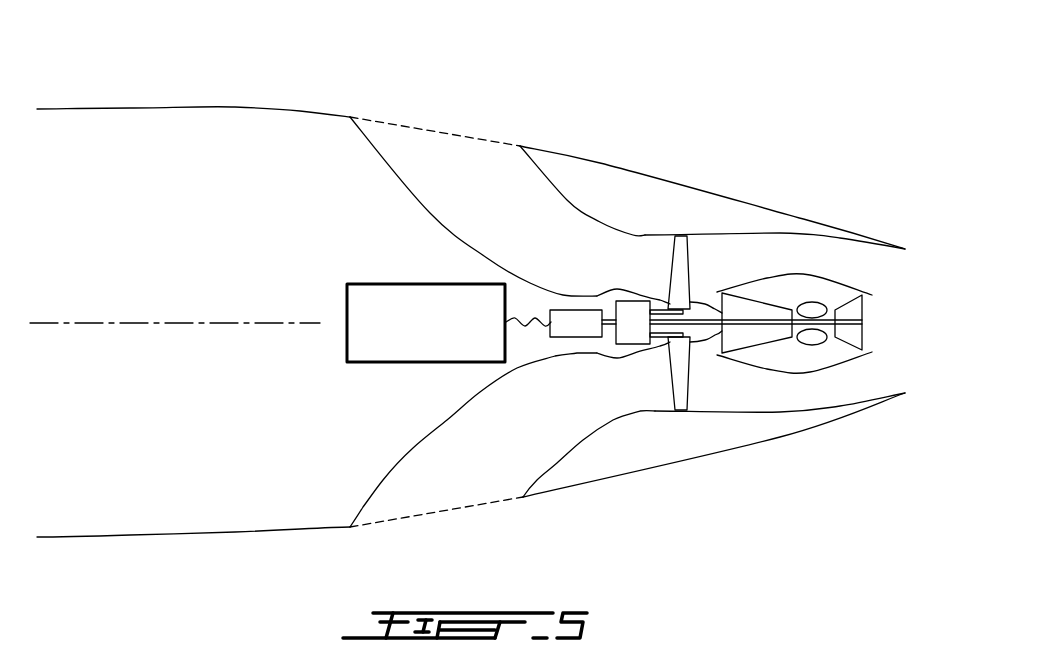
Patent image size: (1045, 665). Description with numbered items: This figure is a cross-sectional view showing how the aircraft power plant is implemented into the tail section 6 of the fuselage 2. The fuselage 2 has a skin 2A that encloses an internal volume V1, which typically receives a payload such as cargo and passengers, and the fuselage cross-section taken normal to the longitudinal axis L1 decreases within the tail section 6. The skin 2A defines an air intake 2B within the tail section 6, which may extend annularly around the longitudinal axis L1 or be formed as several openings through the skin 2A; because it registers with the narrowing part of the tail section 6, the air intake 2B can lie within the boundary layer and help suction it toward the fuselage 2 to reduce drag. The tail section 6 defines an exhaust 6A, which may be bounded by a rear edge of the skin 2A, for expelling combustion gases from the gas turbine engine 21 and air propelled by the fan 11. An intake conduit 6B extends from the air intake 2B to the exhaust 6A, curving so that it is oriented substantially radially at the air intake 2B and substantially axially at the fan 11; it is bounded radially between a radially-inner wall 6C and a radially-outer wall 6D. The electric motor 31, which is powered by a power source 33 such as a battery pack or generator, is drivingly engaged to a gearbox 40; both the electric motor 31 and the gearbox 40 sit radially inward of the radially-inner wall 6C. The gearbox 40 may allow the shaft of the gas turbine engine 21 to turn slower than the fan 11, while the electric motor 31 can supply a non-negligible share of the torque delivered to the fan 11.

The fuselage 2 is at (117, 80).
The skin 2A is at (235, 107).
The air intake 2B is at (437, 128).
The tail section 6 is at (638, 113).
The exhaust 6A is at (908, 334).
The intake conduit 6B is at (509, 176).
The radially-inner wall 6C is at (382, 481).
The radially-outer wall 6D is at (553, 463).
The fan 11 is at (680, 257).
The gas turbine engine 21 is at (811, 204).
The electric motor 31 is at (573, 325).
The power source 33 is at (385, 363).
The gearbox 40 is at (633, 327).
The longitudinal axis L1 is at (200, 321).
The internal volume V1 is at (76, 377).